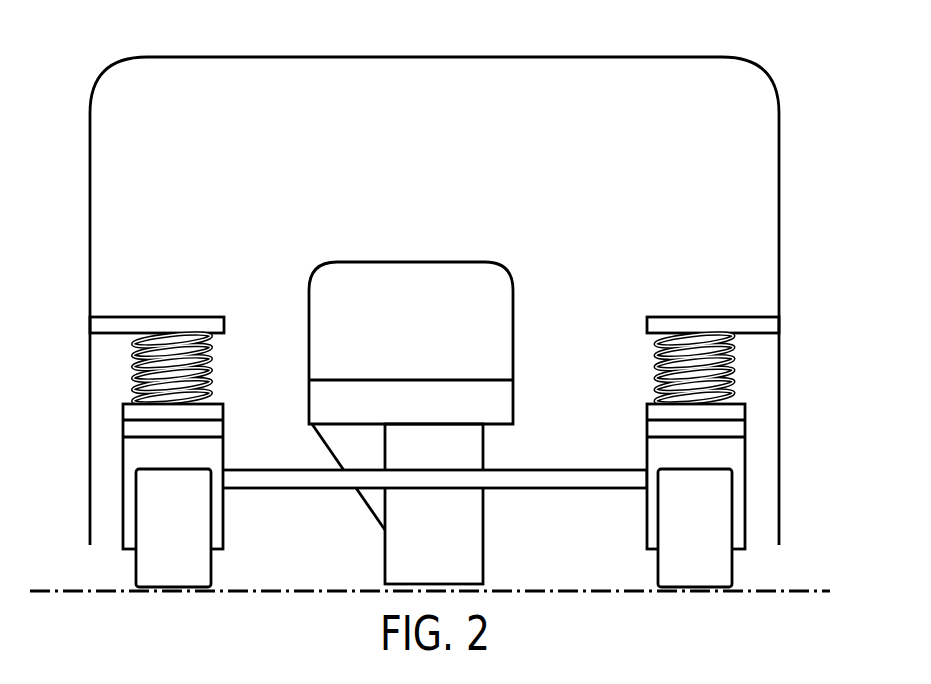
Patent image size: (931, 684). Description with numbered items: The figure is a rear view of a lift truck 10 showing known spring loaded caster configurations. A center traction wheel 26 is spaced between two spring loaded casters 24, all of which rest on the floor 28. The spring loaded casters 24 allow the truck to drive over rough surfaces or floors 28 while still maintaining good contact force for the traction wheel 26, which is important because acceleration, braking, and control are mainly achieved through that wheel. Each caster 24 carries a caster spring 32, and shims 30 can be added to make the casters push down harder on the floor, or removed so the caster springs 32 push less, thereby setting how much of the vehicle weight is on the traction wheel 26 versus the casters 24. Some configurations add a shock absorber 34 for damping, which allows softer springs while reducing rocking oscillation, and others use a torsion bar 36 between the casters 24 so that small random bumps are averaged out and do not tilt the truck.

The device housing 10 is at (742, 90).
The spring loaded caster 24 is at (110, 533).
The center traction wheel 26 is at (397, 565).
The floor 28 is at (107, 594).
The shim 30 is at (746, 408).
The caster spring 32 is at (733, 370).
The shock absorber 34 is at (657, 362).
The torsion bar 36 is at (550, 489).